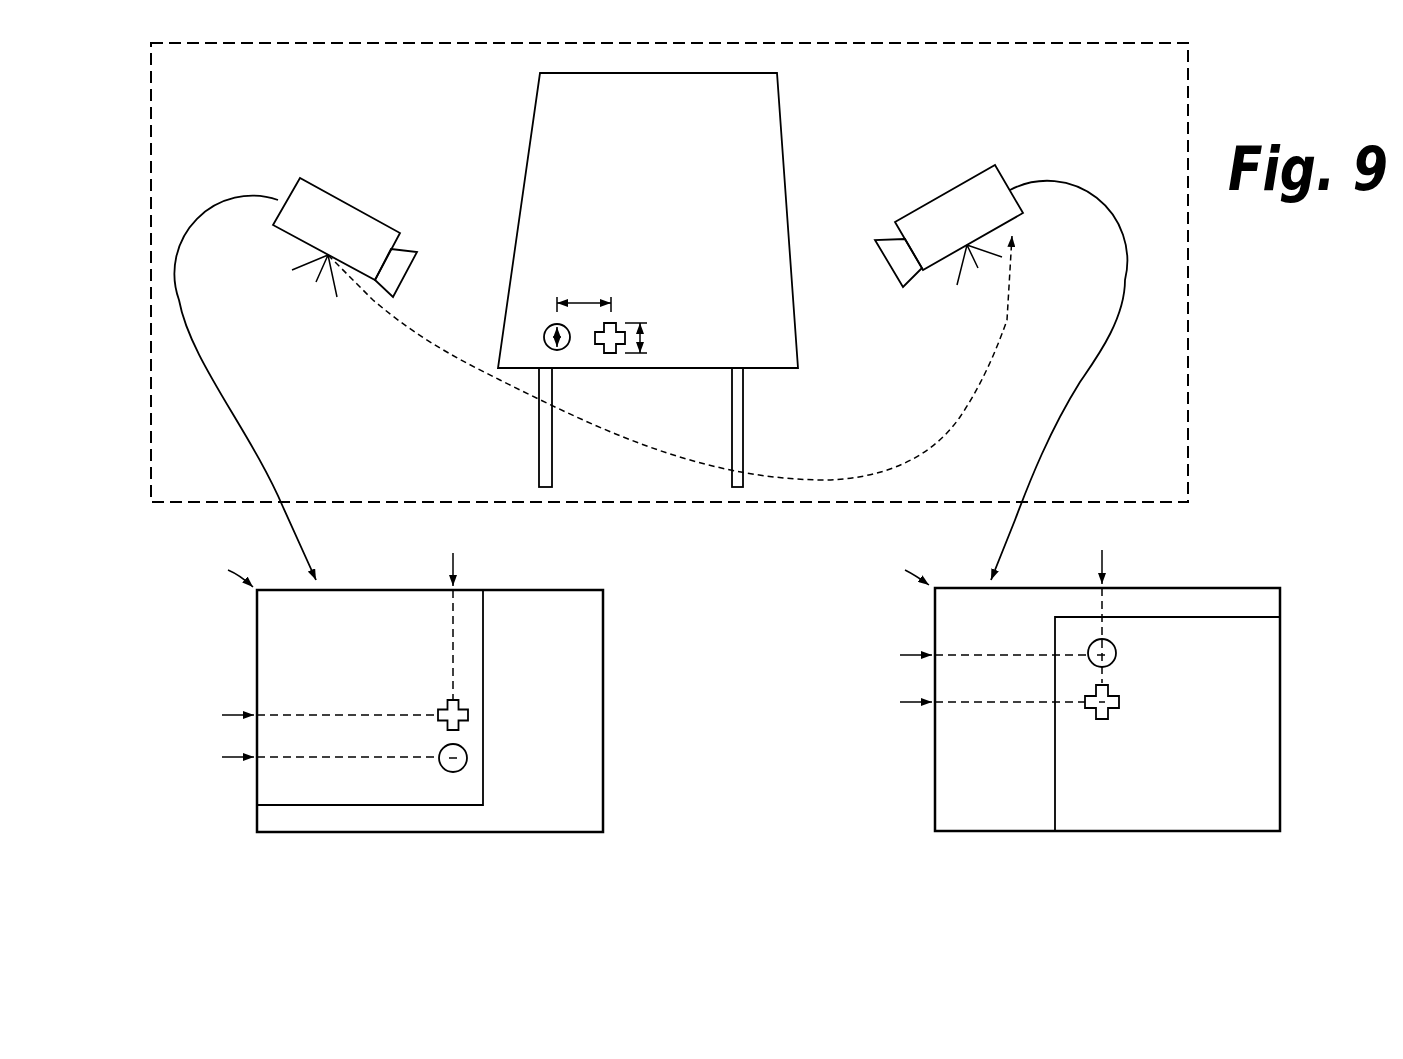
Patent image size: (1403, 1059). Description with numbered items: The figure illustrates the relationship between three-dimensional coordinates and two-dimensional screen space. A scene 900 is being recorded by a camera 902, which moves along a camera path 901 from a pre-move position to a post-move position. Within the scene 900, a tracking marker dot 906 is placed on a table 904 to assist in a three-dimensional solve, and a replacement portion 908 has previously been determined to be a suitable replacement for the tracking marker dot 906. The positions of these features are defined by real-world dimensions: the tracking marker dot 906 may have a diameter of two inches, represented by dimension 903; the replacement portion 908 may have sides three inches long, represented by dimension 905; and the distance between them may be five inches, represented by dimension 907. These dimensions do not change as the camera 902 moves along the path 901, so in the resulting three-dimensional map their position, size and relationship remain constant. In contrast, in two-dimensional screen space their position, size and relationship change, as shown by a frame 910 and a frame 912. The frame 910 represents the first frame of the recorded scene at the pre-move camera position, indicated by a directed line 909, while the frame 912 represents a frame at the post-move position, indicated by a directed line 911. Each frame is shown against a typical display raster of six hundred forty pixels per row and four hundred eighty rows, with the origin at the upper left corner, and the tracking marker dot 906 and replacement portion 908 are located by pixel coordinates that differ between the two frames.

The scene 900 is at (1190, 128).
The camera path 901 is at (462, 358).
The camera 902 is at (342, 200).
The dimension 903 is at (567, 343).
The table 904 is at (545, 188).
The dimension 905 is at (643, 337).
The tracking marker dot 906 is at (777, 542).
The dimension 907 is at (583, 303).
The replacement portion 908 is at (610, 353).
The directed line 909 is at (243, 418).
The frame 910 is at (256, 672).
The directed line 911 is at (1080, 382).
The frame 912 is at (933, 758).